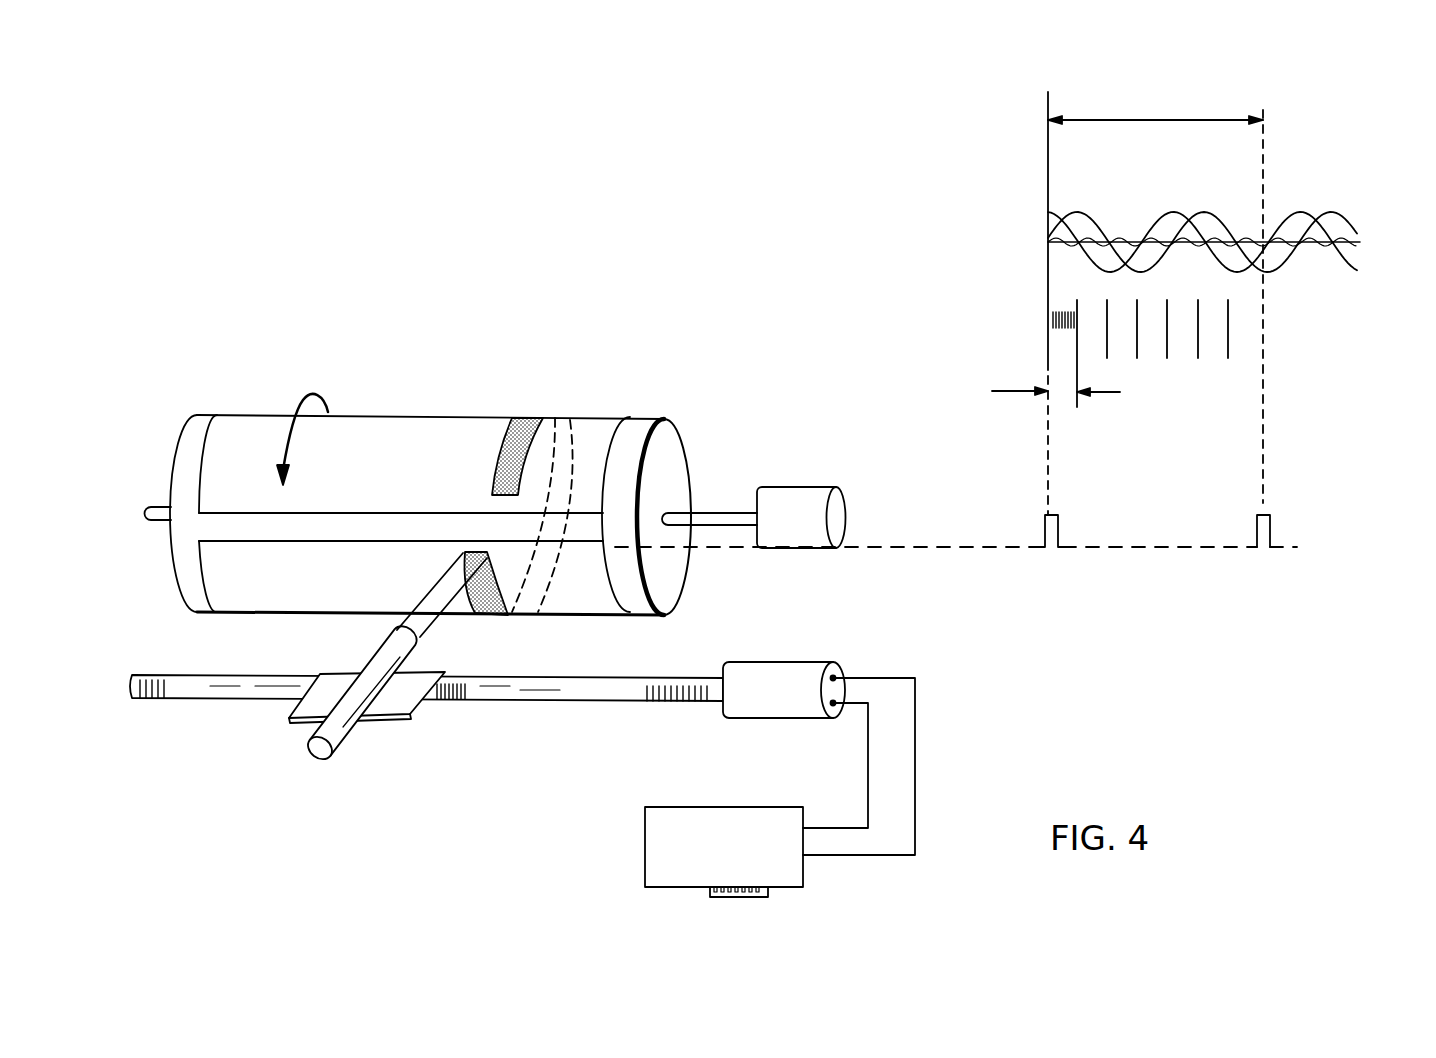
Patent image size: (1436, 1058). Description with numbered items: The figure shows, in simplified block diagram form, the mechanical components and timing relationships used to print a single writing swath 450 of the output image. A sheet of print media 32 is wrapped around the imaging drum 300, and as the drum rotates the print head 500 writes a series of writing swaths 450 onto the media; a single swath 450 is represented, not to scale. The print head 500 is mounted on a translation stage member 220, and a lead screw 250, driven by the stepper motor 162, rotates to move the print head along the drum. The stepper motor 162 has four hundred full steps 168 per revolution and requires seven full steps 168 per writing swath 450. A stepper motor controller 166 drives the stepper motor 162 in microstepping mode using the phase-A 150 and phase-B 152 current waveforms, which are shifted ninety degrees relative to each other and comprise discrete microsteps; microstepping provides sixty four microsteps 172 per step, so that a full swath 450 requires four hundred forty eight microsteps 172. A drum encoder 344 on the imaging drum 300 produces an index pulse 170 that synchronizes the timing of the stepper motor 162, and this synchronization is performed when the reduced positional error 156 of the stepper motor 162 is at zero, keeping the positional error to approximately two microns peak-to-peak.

The imaging drum 300 is at (418, 511).
The print media 32 is at (255, 603).
The writing swath 450 is at (530, 418).
The drum encoder 344 is at (803, 487).
The print head 500 is at (345, 748).
The translation stage member 220 is at (407, 718).
The lead screw 250 is at (648, 697).
The stepper motor 162 is at (765, 662).
The phase-A 150 is at (868, 777).
The phase-B 152 is at (915, 782).
The stepper motor controller 166 is at (757, 898).
The reduced positional error 156 is at (1350, 243).
The microsteps 172 is at (1064, 301).
The full steps 168 is at (1034, 392).
The index pulse 170 is at (934, 548).